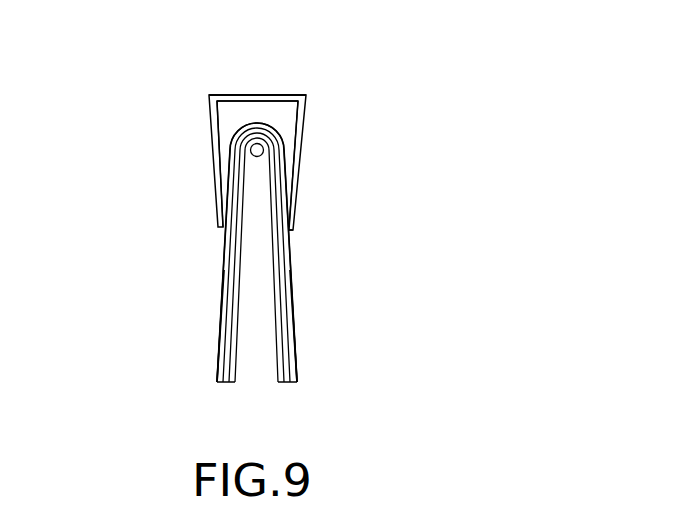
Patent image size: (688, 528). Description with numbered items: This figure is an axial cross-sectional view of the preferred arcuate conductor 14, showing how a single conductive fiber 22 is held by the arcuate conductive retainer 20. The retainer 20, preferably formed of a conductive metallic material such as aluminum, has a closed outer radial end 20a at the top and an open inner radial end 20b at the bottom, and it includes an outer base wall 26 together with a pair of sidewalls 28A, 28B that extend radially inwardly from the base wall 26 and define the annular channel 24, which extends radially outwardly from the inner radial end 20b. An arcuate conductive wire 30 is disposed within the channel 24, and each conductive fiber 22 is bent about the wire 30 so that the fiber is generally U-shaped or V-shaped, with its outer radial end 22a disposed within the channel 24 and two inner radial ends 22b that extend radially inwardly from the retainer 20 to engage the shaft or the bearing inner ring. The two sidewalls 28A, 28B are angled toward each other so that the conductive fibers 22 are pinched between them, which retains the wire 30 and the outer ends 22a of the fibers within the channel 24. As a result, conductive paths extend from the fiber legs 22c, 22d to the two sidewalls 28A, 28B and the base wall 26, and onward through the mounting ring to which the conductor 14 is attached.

The arcuate conductor 14 is at (122, 228).
The arcuate conductive retainer 20 is at (330, 116).
The closed outer radial end 20a is at (208, 82).
The open inner radial end 20b is at (300, 231).
The conductive fiber 22 is at (215, 276).
The outer radial end 22a is at (243, 135).
The inner radial end 22b is at (218, 385).
The fiber leg 22c is at (223, 362).
The fiber leg 22d is at (290, 307).
The annular channel 24 is at (243, 117).
The outer base wall 26 is at (270, 97).
The sidewall 28A is at (212, 143).
The sidewall 28B is at (297, 145).
The arcuate conductive wire 30 is at (259, 152).